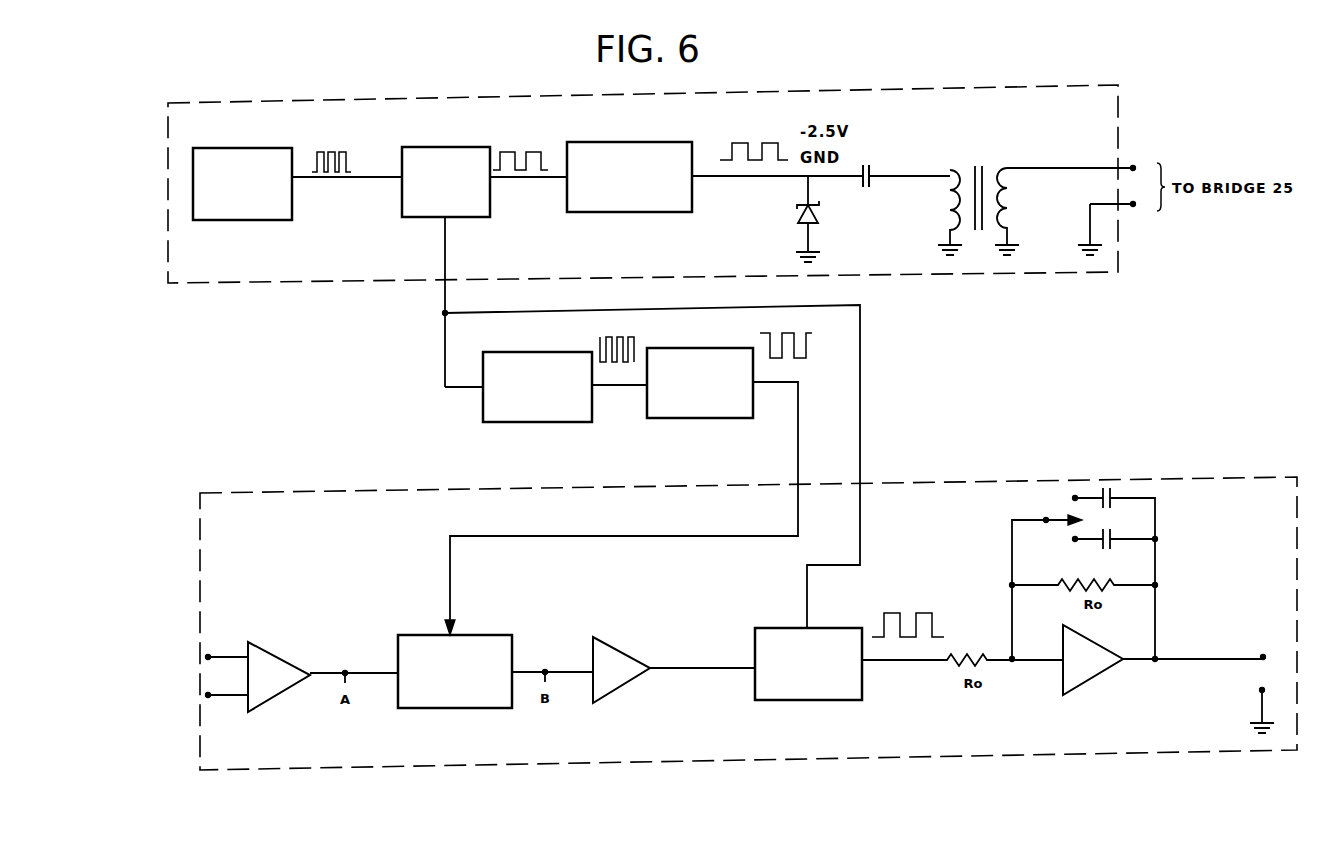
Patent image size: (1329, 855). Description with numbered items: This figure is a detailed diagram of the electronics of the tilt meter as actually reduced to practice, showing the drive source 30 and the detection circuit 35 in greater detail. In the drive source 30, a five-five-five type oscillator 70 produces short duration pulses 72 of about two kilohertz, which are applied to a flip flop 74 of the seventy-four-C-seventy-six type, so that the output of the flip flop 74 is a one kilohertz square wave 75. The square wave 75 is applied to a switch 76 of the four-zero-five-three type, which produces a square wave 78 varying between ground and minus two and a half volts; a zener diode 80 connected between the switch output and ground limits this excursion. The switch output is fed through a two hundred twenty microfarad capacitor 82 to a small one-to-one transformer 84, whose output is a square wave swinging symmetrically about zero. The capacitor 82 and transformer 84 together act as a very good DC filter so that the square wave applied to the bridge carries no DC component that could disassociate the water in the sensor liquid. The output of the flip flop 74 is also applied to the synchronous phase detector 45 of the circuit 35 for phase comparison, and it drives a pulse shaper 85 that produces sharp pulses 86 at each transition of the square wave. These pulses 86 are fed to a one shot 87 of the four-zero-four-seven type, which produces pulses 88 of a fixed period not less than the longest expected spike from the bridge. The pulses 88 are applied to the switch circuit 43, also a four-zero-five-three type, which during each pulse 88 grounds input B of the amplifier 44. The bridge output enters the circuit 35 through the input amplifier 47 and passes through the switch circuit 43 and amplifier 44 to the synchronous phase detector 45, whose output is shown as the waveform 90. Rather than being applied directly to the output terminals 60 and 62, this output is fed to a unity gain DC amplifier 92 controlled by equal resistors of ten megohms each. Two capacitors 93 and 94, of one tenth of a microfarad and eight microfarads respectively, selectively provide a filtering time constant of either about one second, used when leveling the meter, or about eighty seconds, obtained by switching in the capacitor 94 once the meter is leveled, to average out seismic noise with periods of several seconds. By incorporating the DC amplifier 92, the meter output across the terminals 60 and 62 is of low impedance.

The drive source 30 is at (1118, 85).
The oscillator 70 is at (243, 148).
The short duration pulses 72 is at (341, 148).
The flip flop 74 is at (443, 147).
The square wave 75 is at (516, 150).
The switch 76 is at (630, 142).
The square wave 78 is at (765, 145).
The zener diode 80 is at (800, 215).
The capacitor 82 is at (870, 170).
The transformer 84 is at (947, 209).
The pulse shaper 85 is at (534, 422).
The sharp pulses 86 is at (600, 338).
The one shot 87 is at (697, 418).
The pulses 88 is at (760, 333).
The circuit 35 is at (890, 482).
The input amplifier 47 is at (271, 691).
The switch circuit 43 is at (448, 708).
The amplifier 44 is at (622, 690).
The synchronous phase detector 45 is at (810, 700).
The waveform 90 is at (907, 613).
The DC amplifier 92 is at (1097, 662).
The capacitor 93 is at (1100, 545).
The capacitor 94 is at (1104, 482).
The output terminal 60 is at (1262, 652).
The output terminal 62 is at (1261, 689).